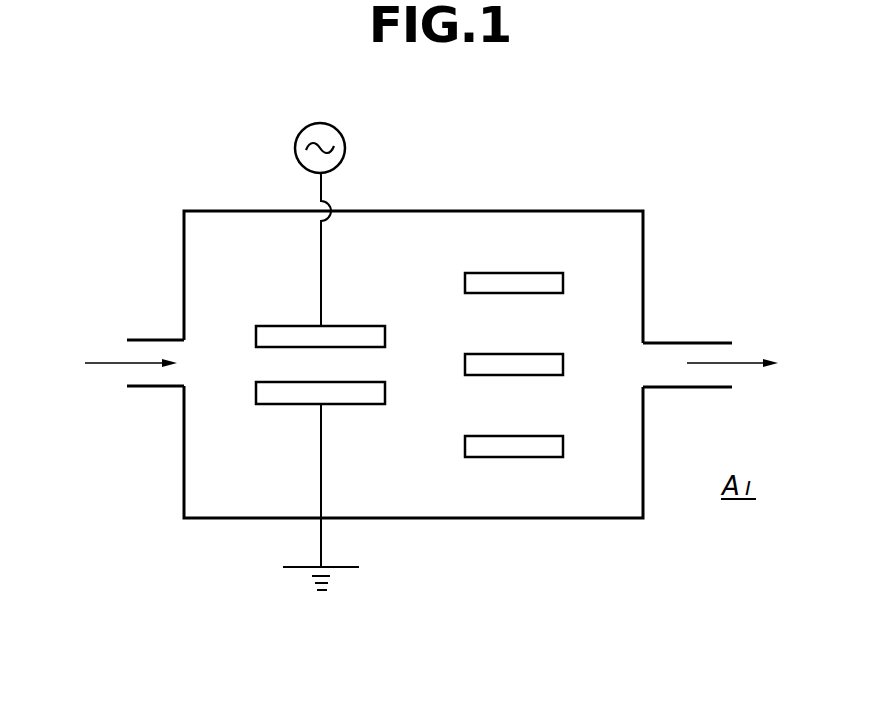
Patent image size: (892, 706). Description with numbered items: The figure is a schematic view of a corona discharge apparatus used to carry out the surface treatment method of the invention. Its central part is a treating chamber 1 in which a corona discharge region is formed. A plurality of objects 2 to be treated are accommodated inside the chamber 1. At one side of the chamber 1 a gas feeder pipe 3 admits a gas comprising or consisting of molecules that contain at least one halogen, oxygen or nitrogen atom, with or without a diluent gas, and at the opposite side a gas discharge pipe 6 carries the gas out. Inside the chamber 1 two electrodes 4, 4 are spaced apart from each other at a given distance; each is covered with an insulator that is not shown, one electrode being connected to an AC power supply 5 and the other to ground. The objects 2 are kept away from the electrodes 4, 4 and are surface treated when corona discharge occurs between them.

The treating chamber 1 is at (514, 211).
The objects to be treated 2 is at (563, 285).
The gas feeder pipe 3 is at (144, 340).
The electrodes 4 is at (348, 326).
The AC power supply 5 is at (344, 140).
The gas discharge pipe 6 is at (683, 387).